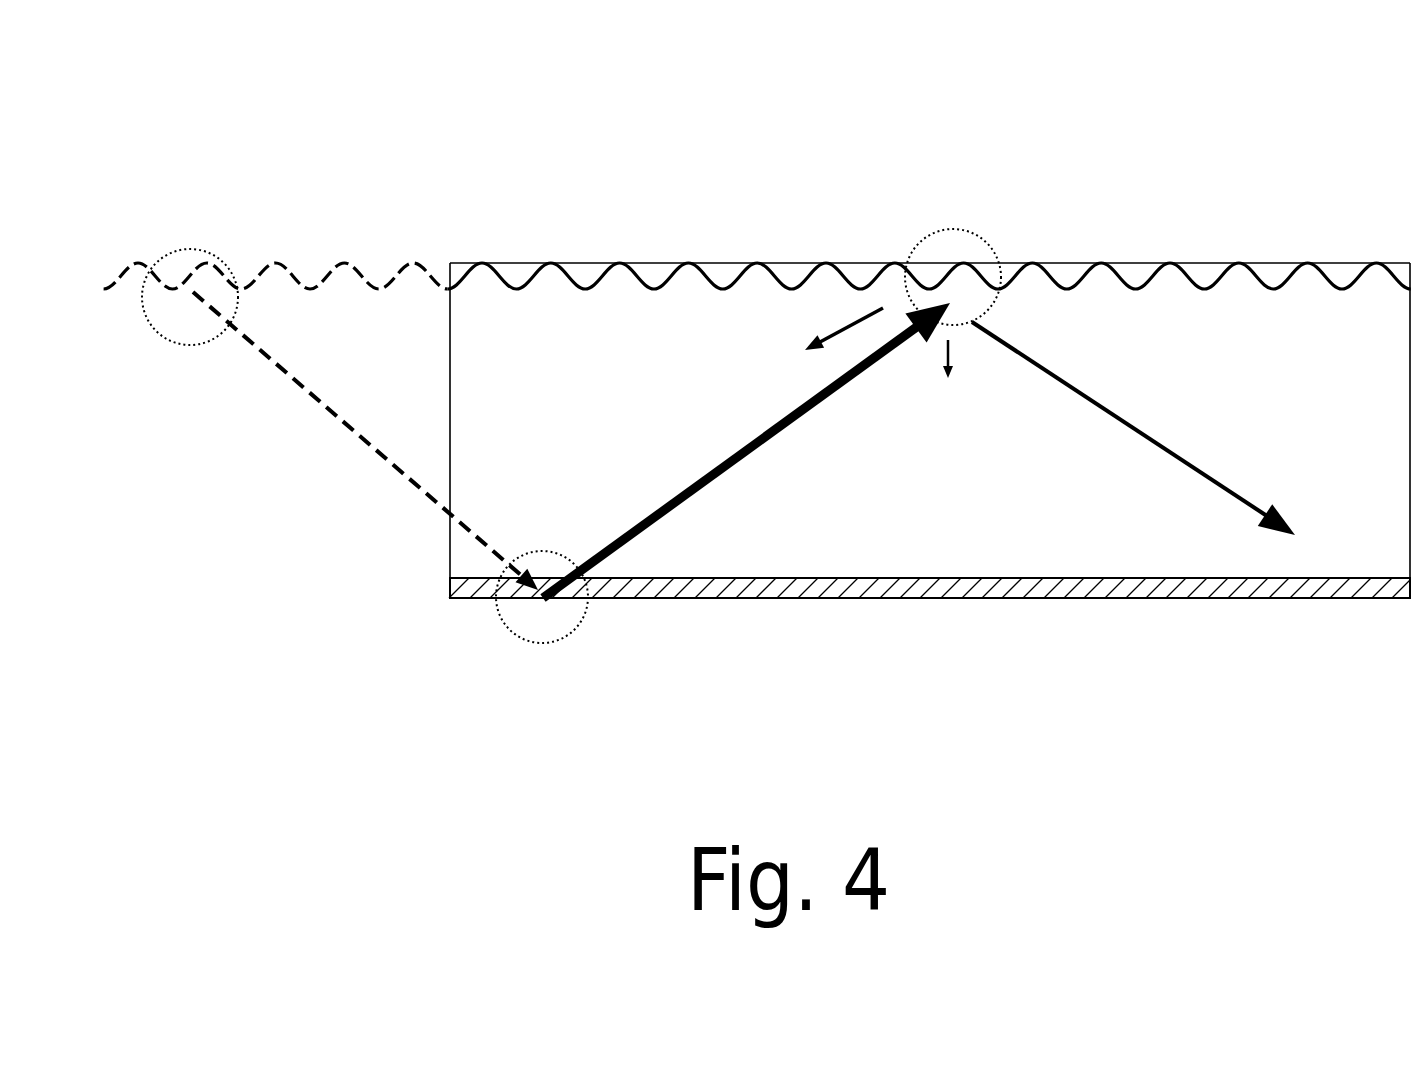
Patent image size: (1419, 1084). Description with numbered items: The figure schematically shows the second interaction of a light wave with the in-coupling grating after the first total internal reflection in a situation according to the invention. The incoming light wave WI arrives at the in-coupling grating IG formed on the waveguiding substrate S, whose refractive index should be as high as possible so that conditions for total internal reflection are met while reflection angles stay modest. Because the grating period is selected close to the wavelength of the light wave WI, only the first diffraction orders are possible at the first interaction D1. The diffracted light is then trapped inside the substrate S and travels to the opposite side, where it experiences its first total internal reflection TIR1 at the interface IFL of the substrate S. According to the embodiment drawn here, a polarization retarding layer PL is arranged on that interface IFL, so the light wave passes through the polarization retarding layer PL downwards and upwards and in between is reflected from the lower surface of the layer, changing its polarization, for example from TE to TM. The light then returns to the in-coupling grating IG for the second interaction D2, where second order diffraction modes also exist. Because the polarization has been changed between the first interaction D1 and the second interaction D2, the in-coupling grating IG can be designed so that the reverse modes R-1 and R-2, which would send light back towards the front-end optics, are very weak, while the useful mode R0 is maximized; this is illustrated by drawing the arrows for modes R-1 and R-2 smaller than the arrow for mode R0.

The substrate S is at (603, 342).
The in-coupling grating IG is at (483, 265).
The polarization retarding layer PL is at (875, 588).
The interface IFL is at (733, 600).
The first interaction/diffraction D1 is at (177, 247).
The second interaction/diffraction D2 is at (945, 230).
The first TIR TIR1 is at (542, 643).
The light wave WI is at (363, 440).
The R-2 diffraction mode R-2 is at (746, 450).
The R-1 diffraction mode R-1 is at (988, 403).
The R0 diffraction mode R0 is at (1179, 447).